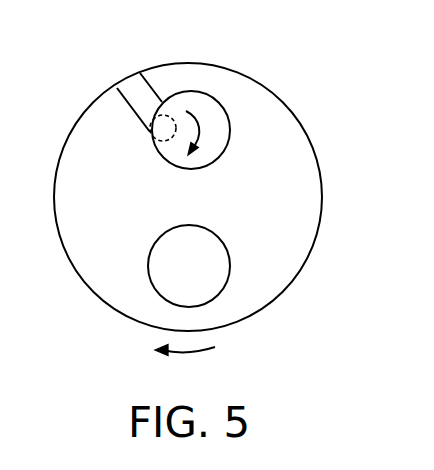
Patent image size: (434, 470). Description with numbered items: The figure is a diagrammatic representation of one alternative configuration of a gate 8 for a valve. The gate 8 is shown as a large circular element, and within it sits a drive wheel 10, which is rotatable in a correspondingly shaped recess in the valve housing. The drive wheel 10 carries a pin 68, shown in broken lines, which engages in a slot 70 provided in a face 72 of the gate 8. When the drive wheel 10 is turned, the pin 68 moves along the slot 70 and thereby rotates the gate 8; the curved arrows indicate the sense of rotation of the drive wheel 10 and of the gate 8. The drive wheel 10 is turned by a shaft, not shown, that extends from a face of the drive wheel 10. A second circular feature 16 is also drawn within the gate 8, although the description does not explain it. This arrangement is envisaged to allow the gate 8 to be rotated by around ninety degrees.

The gate 8 is at (277, 138).
The drive wheel 10 is at (213, 117).
The second bore 16 is at (210, 278).
The pin 68 is at (153, 138).
The slot 70 is at (130, 88).
The face 72 is at (100, 128).